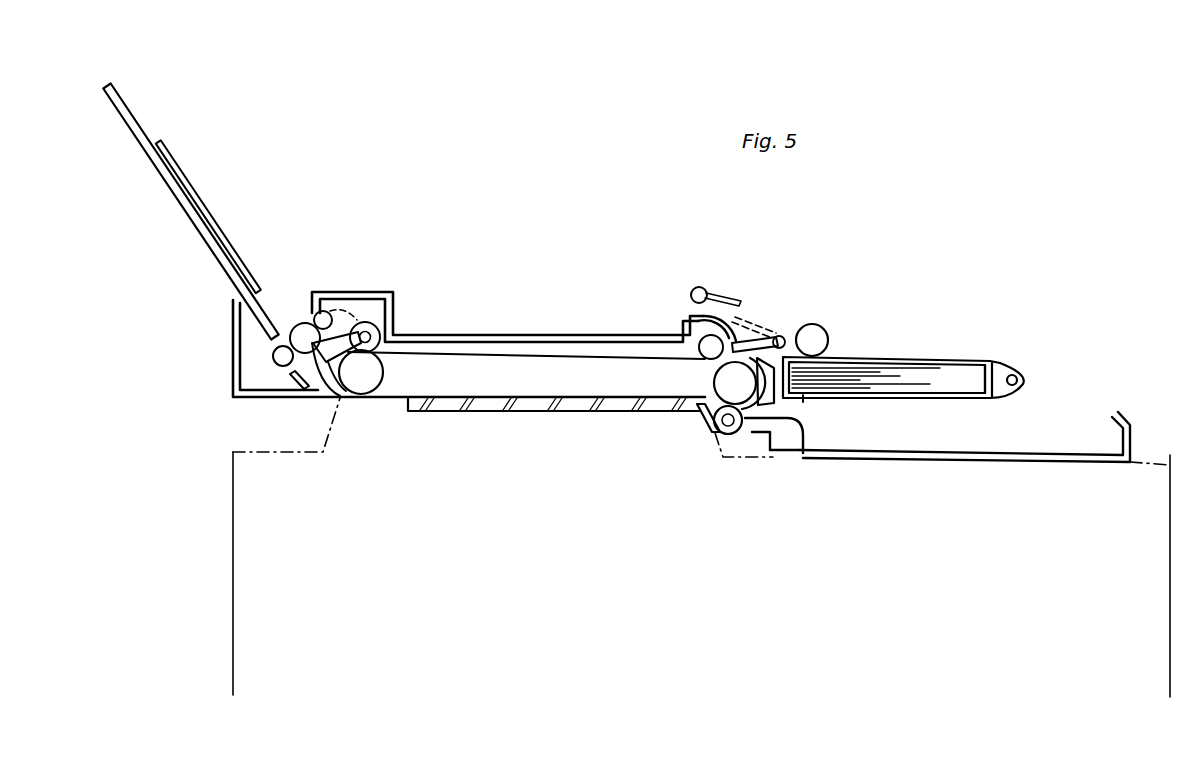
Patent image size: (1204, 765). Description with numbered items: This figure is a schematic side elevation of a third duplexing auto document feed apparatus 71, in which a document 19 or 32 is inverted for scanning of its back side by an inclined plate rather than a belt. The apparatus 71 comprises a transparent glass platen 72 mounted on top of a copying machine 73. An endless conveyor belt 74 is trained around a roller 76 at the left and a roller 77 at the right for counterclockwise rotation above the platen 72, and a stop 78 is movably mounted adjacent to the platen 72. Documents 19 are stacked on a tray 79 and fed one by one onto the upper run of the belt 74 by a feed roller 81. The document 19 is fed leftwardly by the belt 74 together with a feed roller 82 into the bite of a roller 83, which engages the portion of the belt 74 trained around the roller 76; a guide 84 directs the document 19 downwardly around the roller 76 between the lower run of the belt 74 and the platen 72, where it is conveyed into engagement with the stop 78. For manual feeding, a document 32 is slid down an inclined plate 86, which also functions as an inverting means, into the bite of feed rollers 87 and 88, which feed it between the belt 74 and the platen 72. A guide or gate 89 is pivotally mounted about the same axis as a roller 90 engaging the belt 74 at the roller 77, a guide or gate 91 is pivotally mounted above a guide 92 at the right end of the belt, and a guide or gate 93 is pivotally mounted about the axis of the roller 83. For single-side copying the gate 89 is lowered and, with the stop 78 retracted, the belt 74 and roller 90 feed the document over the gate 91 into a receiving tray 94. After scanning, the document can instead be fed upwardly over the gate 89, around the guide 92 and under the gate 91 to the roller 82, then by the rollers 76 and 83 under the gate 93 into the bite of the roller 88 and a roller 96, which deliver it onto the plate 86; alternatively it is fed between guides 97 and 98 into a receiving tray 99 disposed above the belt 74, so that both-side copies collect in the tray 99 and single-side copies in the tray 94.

The apparatus 71 is at (507, 206).
The document 32 is at (190, 188).
The inclined plate 86 is at (181, 212).
The feed roller 88 is at (298, 324).
The roller 96 is at (327, 311).
The roller 83 is at (370, 322).
The feed roller 87 is at (273, 350).
The guide or gate 93 is at (334, 346).
The guide 84 is at (300, 383).
The roller 76 is at (363, 382).
The receiving tray 99 is at (526, 335).
The endless conveyor belt 74 is at (577, 353).
The transparent glass platen 72 is at (517, 412).
The feed roller 82 is at (708, 359).
The roller 77 is at (727, 385).
The stop 78 is at (703, 422).
The guide 98 is at (701, 288).
The guide 97 is at (725, 318).
The guide or gate 91 is at (760, 333).
The feed roller 81 is at (822, 327).
The document 19 is at (942, 376).
The tray 79 is at (947, 402).
The roller 90 is at (724, 437).
The guide or gate 89 is at (796, 467).
The guide 92 is at (816, 392).
The receiving tray 94 is at (1046, 462).
The copying machine 73 is at (232, 580).